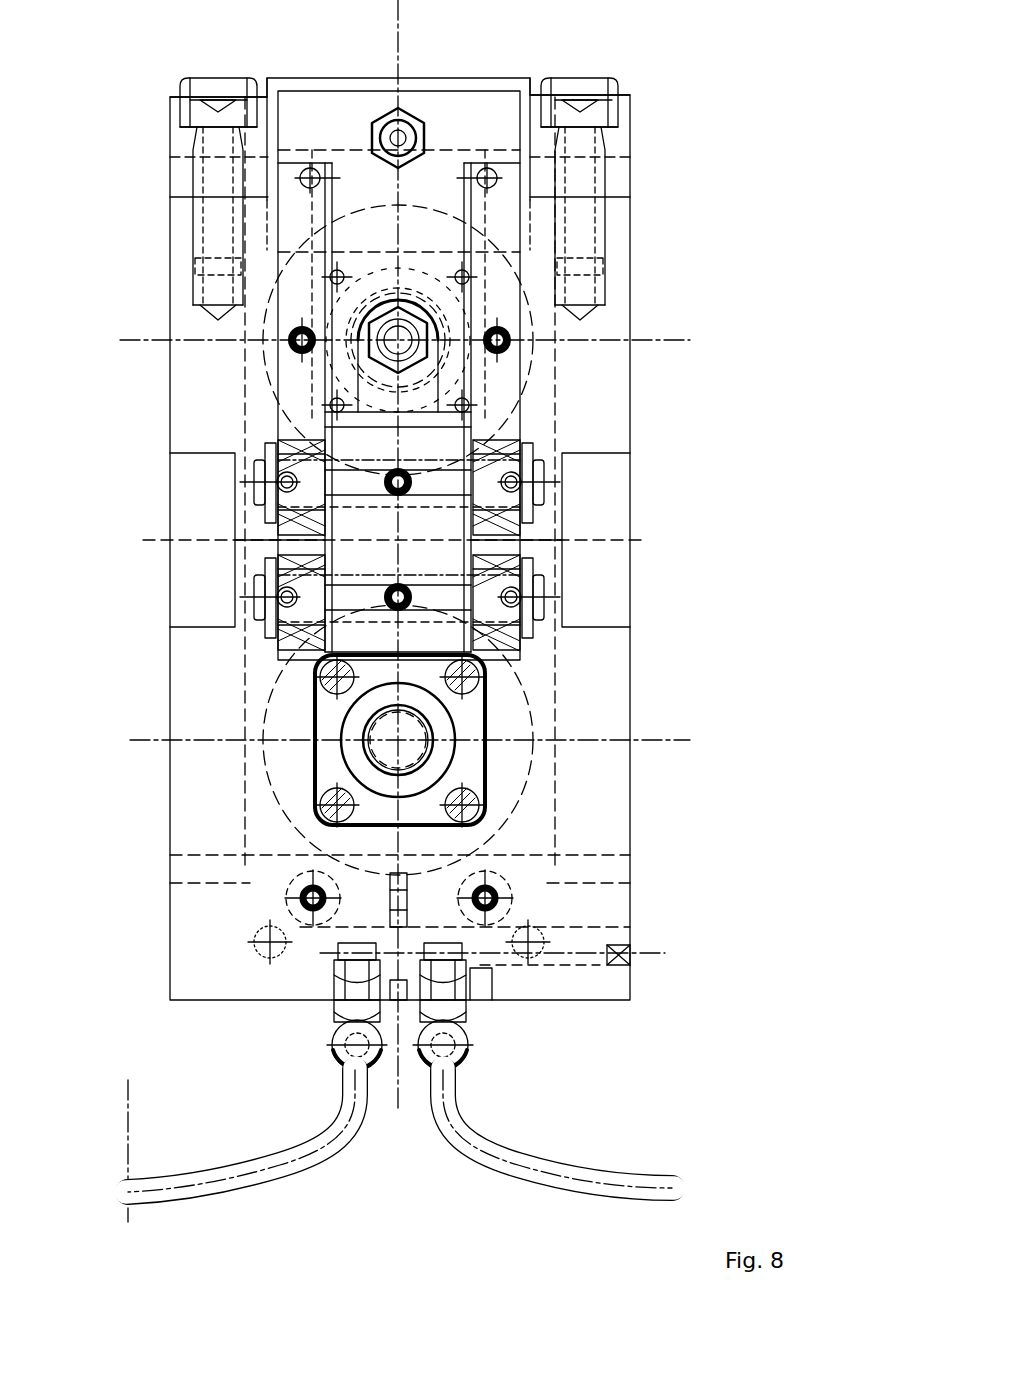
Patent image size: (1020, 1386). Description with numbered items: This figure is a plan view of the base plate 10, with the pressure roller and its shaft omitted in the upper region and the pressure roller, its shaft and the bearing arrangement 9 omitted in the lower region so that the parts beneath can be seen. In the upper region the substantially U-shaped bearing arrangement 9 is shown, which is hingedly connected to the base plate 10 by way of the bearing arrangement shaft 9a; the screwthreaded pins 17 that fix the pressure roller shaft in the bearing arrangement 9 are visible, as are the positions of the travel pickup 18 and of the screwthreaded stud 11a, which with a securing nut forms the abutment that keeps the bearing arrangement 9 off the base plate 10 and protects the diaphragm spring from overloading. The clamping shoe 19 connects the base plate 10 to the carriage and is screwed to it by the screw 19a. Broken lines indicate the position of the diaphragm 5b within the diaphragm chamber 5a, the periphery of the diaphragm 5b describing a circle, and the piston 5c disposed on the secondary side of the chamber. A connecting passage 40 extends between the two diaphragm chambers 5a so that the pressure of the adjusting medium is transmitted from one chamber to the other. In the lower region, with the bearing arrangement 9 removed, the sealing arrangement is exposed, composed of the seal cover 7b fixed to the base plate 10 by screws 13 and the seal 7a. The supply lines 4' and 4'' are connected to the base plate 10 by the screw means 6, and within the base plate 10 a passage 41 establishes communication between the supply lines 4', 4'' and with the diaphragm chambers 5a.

The supply line 4' is at (558, 1162).
The supply line 4'' is at (240, 1157).
The diaphragm chamber 5a is at (690, 857).
The diaphragm 5b is at (697, 812).
The piston 5c is at (370, 725).
The screw means 6 is at (373, 1023).
The seal 7a is at (433, 733).
The seal cover 7b is at (470, 768).
The bearing arrangement 9 is at (508, 212).
The bearing arrangement shaft 9a is at (545, 497).
The base plate 10 is at (205, 930).
The screwthreaded stud 11a is at (413, 118).
The screws 13 is at (517, 683).
The screwthreaded pins 17 is at (302, 340).
The travel pickup 18 is at (440, 330).
The clamping shoe 19 is at (620, 138).
The screw 19a is at (622, 78).
The connecting passage 40 is at (392, 527).
The passage 41 is at (597, 950).